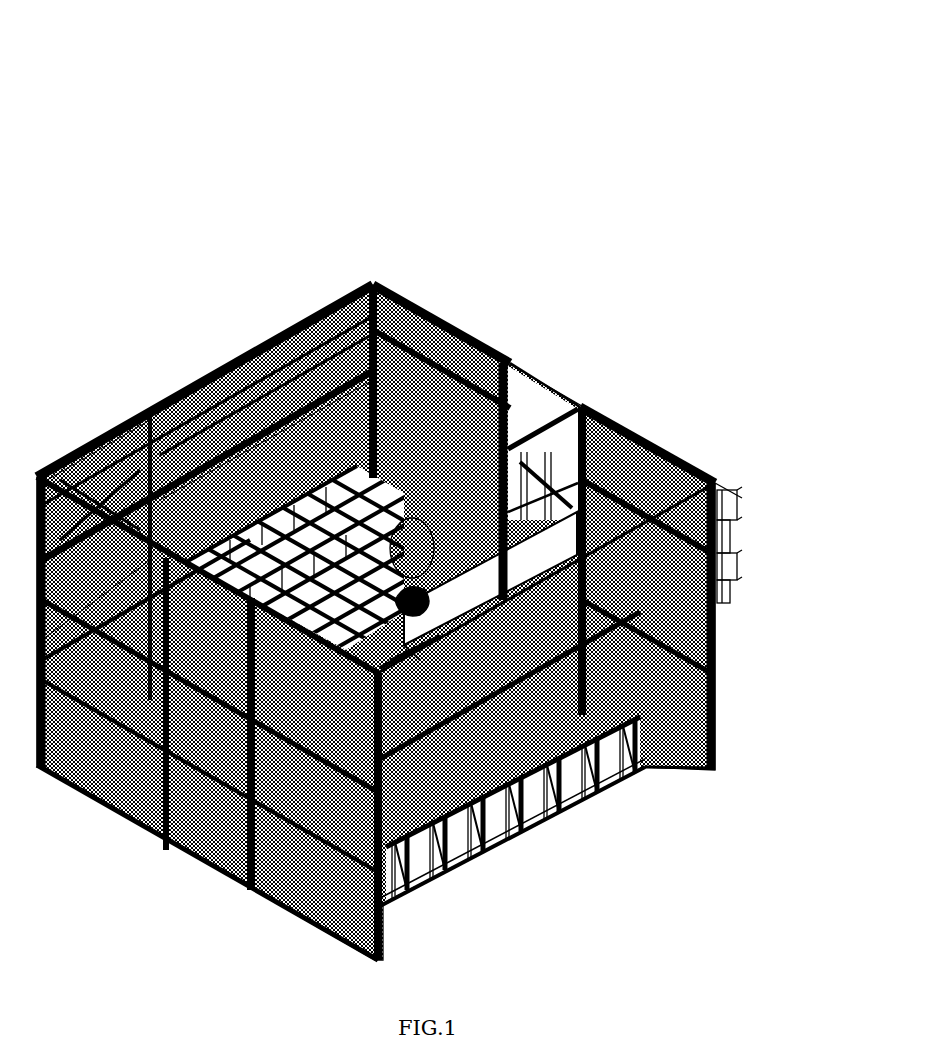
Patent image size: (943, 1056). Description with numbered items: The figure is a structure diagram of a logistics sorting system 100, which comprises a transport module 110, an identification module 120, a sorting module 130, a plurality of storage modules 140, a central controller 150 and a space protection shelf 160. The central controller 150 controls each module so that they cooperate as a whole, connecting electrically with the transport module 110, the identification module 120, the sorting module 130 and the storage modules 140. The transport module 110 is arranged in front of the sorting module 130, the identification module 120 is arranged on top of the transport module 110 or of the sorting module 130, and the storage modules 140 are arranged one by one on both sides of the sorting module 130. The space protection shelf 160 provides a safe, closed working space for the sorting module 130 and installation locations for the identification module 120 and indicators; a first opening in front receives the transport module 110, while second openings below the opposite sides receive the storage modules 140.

The logistics sorting system 100 is at (408, 511).
The transport module 110 is at (733, 497).
The identification module 120 is at (467, 340).
The sorting module 130 is at (330, 310).
The storage modules 140 is at (570, 803).
The central controller 150 is at (522, 405).
The space protection shelf 160 is at (190, 390).